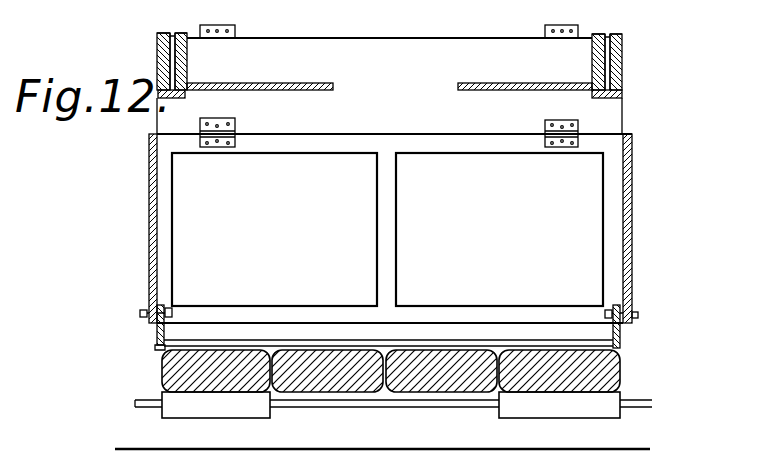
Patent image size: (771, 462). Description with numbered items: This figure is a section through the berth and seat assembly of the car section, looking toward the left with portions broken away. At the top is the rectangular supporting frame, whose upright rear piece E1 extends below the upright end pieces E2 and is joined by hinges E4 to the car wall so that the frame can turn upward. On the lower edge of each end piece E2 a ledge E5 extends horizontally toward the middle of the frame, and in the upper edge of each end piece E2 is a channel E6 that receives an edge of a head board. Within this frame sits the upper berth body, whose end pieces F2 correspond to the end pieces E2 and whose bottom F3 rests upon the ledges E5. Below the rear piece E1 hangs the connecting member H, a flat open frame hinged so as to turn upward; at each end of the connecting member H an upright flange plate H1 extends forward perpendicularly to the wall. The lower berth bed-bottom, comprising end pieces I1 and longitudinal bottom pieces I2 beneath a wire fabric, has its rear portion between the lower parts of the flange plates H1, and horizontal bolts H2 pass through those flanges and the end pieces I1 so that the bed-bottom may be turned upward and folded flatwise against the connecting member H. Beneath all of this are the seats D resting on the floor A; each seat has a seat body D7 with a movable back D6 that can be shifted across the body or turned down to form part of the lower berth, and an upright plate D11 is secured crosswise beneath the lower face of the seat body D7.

The upright rear piece E1 is at (389, 74).
The upright end pieces E2 is at (157, 57).
The hinges E4 is at (237, 33).
The ledge E5 is at (623, 98).
The channel E6 is at (160, 32).
The end piece F2 is at (188, 60).
The bottom F3 is at (205, 93).
The connecting member H is at (492, 143).
The upright flange plate H1 is at (148, 237).
The horizontal bolts H2 is at (142, 312).
The end pieces I1 is at (157, 330).
The longitudinal bottom pieces I2 is at (543, 343).
The seat D is at (647, 372).
The back D6 is at (350, 375).
The seat body D7 is at (173, 363).
The upright plate D11 is at (185, 403).
The floor A is at (630, 449).